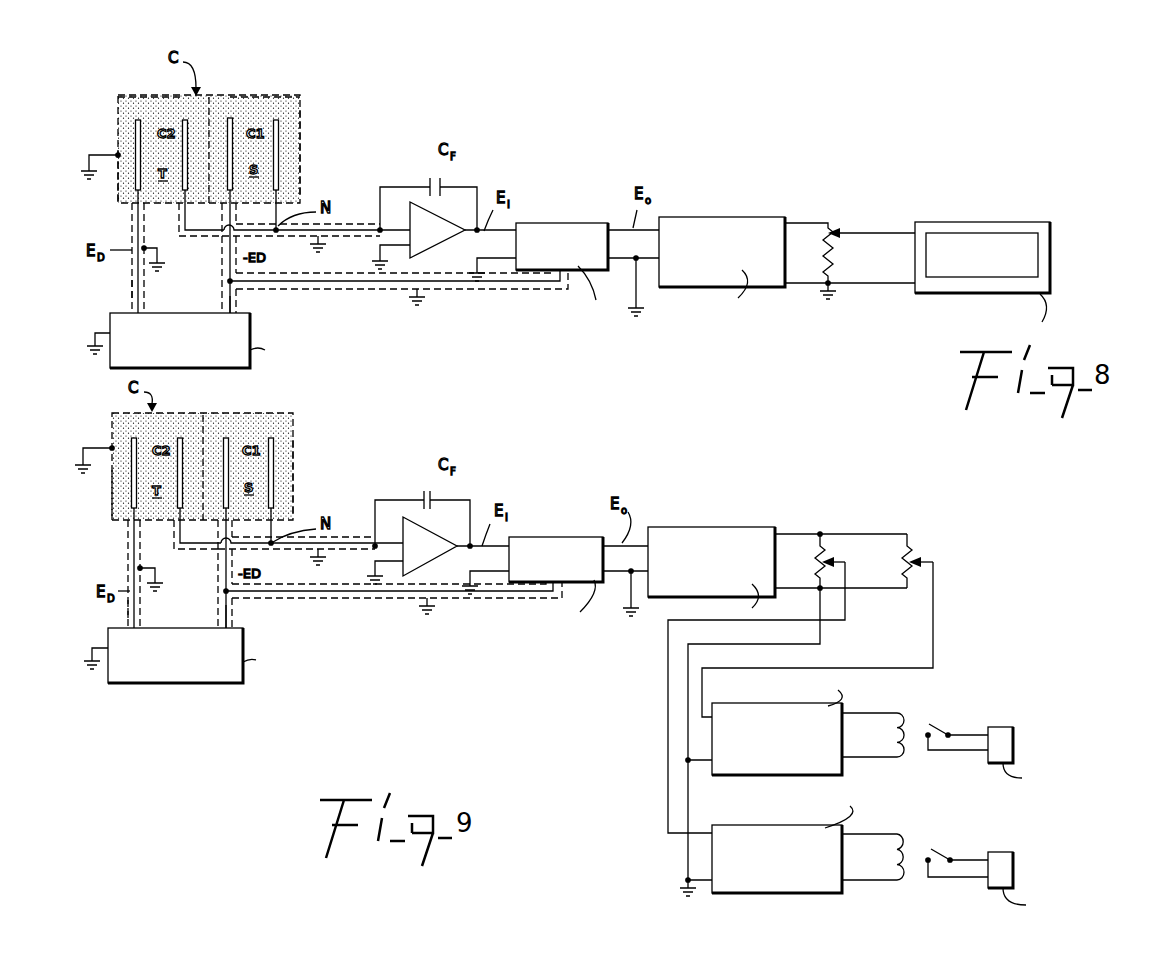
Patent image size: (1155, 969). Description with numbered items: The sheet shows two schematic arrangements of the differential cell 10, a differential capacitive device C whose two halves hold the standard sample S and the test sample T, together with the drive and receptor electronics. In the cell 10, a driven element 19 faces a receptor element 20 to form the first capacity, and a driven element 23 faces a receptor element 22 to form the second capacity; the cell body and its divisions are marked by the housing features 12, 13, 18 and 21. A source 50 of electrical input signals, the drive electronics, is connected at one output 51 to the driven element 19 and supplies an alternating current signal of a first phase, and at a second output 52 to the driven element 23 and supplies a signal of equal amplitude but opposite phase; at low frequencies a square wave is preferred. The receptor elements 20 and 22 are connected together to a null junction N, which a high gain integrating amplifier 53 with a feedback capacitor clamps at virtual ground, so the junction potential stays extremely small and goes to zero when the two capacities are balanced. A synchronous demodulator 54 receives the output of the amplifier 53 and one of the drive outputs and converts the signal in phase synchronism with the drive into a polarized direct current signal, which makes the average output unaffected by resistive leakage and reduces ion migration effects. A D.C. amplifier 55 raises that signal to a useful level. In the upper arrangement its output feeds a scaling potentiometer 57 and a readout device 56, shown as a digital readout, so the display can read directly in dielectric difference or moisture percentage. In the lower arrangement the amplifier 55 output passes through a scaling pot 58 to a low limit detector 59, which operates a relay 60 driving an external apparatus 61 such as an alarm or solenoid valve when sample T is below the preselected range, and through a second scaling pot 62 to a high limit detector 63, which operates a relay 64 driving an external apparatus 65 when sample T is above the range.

In FIG. 8, the differential cell 10 is at (268, 82).
In FIG. 9, the differential cell 10 is at (300, 440).
In FIG. 8, the housing 12 is at (292, 134).
In FIG. 9, the housing 12 is at (290, 496).
In FIG. 8, the shield 13 is at (122, 186).
In FIG. 9, the shield 13 is at (116, 506).
In FIG. 8, the dielectric body 18 is at (272, 100).
In FIG. 8, the driven element 19 is at (233, 117).
In FIG. 9, the driven element 19 is at (230, 438).
In FIG. 8, the receptor element 20 is at (280, 168).
In FIG. 9, the receptor element 20 is at (275, 462).
In FIG. 8, the dielectric 21 is at (148, 100).
In FIG. 8, the receptor element 22 is at (189, 121).
In FIG. 9, the receptor element 22 is at (184, 438).
In FIG. 8, the driven element 23 is at (135, 122).
In FIG. 9, the driven element 23 is at (131, 440).
In FIG. 8, the source of electrical input signals 50 is at (187, 348).
In FIG. 9, the source of electrical input signals 50 is at (183, 663).
In FIG. 8, the output 51 is at (234, 303).
In FIG. 9, the output 51 is at (229, 612).
In FIG. 8, the output 52 is at (132, 291).
In FIG. 9, the output 52 is at (135, 612).
In FIG. 8, the high gain integrating amplifier 53 is at (438, 239).
In FIG. 9, the high gain integrating amplifier 53 is at (431, 555).
In FIG. 8, the synchronous demodulator 54 is at (569, 255).
In FIG. 9, the synchronous demodulator 54 is at (563, 568).
In FIG. 8, the D.C. amplifier 55 is at (729, 259).
In FIG. 9, the D.C. amplifier 55 is at (719, 569).
In FIG. 8, the readout device 56 is at (832, 228).
In FIG. 8, the scaling potentiometer 57 is at (1012, 226).
In FIG. 9, the scaling pot 58 is at (828, 548).
In FIG. 9, the low limit detector 59 is at (781, 851).
In FIG. 9, the relay 60 is at (904, 847).
In FIG. 9, the external apparatus 61 is at (1014, 876).
In FIG. 9, the second scaling pot 62 is at (914, 553).
In FIG. 9, the high limit detector 63 is at (779, 729).
In FIG. 9, the relay 64 is at (908, 722).
In FIG. 9, the external apparatus 65 is at (1014, 750).